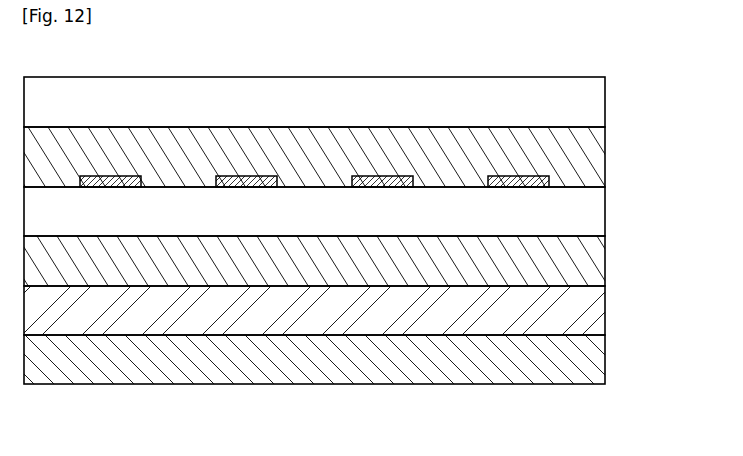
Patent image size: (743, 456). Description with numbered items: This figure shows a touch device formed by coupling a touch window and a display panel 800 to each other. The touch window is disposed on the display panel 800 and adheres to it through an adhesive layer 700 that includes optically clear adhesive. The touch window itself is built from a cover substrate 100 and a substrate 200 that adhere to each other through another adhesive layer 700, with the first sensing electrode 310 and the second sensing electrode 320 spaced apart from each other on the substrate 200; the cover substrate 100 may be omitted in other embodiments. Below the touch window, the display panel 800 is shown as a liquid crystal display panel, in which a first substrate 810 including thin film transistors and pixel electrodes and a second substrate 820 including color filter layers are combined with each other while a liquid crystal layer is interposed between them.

The cover substrate 100 is at (597, 102).
The adhesive layer 700 is at (597, 152).
The substrate 200 is at (597, 214).
The display panel 800 is at (354, 335).
The second substrate 820 is at (598, 310).
The first substrate 810 is at (332, 359).
The first sensing electrode 310 is at (123, 177).
The second sensing electrode 320 is at (240, 183).